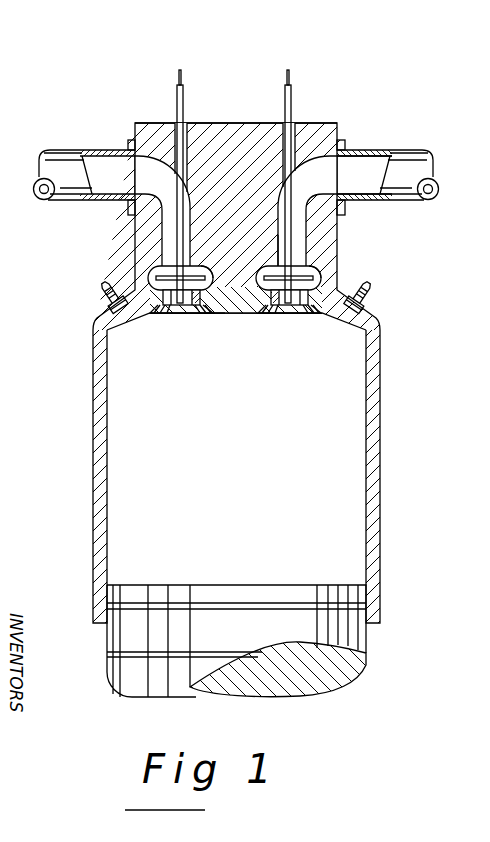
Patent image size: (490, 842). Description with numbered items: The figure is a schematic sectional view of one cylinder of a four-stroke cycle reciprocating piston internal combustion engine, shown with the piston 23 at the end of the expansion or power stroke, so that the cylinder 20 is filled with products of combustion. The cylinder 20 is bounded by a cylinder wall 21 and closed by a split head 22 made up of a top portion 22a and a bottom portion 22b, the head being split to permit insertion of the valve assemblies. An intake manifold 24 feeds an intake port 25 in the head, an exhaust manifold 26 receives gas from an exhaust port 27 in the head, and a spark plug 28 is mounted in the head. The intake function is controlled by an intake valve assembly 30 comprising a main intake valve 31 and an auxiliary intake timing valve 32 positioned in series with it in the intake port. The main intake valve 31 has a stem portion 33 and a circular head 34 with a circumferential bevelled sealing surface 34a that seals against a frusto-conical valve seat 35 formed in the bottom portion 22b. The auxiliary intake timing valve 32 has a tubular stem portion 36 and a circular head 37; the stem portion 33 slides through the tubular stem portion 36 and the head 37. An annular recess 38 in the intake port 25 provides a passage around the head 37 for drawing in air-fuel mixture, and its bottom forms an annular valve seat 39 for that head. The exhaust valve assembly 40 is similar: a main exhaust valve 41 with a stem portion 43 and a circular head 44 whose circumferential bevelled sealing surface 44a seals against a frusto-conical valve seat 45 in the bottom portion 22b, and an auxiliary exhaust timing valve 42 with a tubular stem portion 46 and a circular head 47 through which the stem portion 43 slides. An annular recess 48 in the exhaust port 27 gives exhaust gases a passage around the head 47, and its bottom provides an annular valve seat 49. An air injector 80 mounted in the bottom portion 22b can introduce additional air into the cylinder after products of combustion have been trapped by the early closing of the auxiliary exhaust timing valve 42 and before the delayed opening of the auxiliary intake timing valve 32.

The cylinder 20 is at (203, 476).
The cylinder wall 21 is at (98, 430).
The split head 22 is at (238, 120).
The top portion 22a is at (208, 121).
The bottom portion 22b is at (250, 314).
The reciprocal piston 23 is at (215, 676).
The intake manifold 24 is at (426, 170).
The intake port 25 is at (345, 160).
The exhaust manifold 26 is at (54, 172).
The exhaust port 27 is at (141, 176).
The spark plug 28 is at (376, 296).
The intake valve assembly 30 is at (313, 178).
The main intake valve 31 is at (356, 288).
The auxiliary intake timing valve 32 is at (319, 254).
The stem portion 33 is at (298, 57).
The circular head 34 is at (289, 320).
The circumferential bevelled sealing surface 34a is at (279, 344).
The frusto-conical valve seat 35 is at (293, 347).
The tubular stem portion 36 is at (322, 170).
The circular head 37 is at (333, 269).
The annular recess 38 is at (364, 253).
The annular valve seat 39 is at (302, 258).
The exhaust valve assembly 40 is at (176, 98).
The main exhaust valve 41 is at (181, 305).
The auxiliary exhaust timing valve 42 is at (180, 272).
The stem portion 43 is at (181, 76).
The circular head 44 is at (183, 308).
The circumferential bevelled sealing surface 44a is at (191, 310).
The frusto-conical valve seat 45 is at (163, 308).
The tubular stem portion 46 is at (174, 132).
The circular head 47 is at (160, 278).
The annular recess 48 is at (195, 270).
The annular valve seat 49 is at (214, 312).
The air injector 80 is at (100, 298).